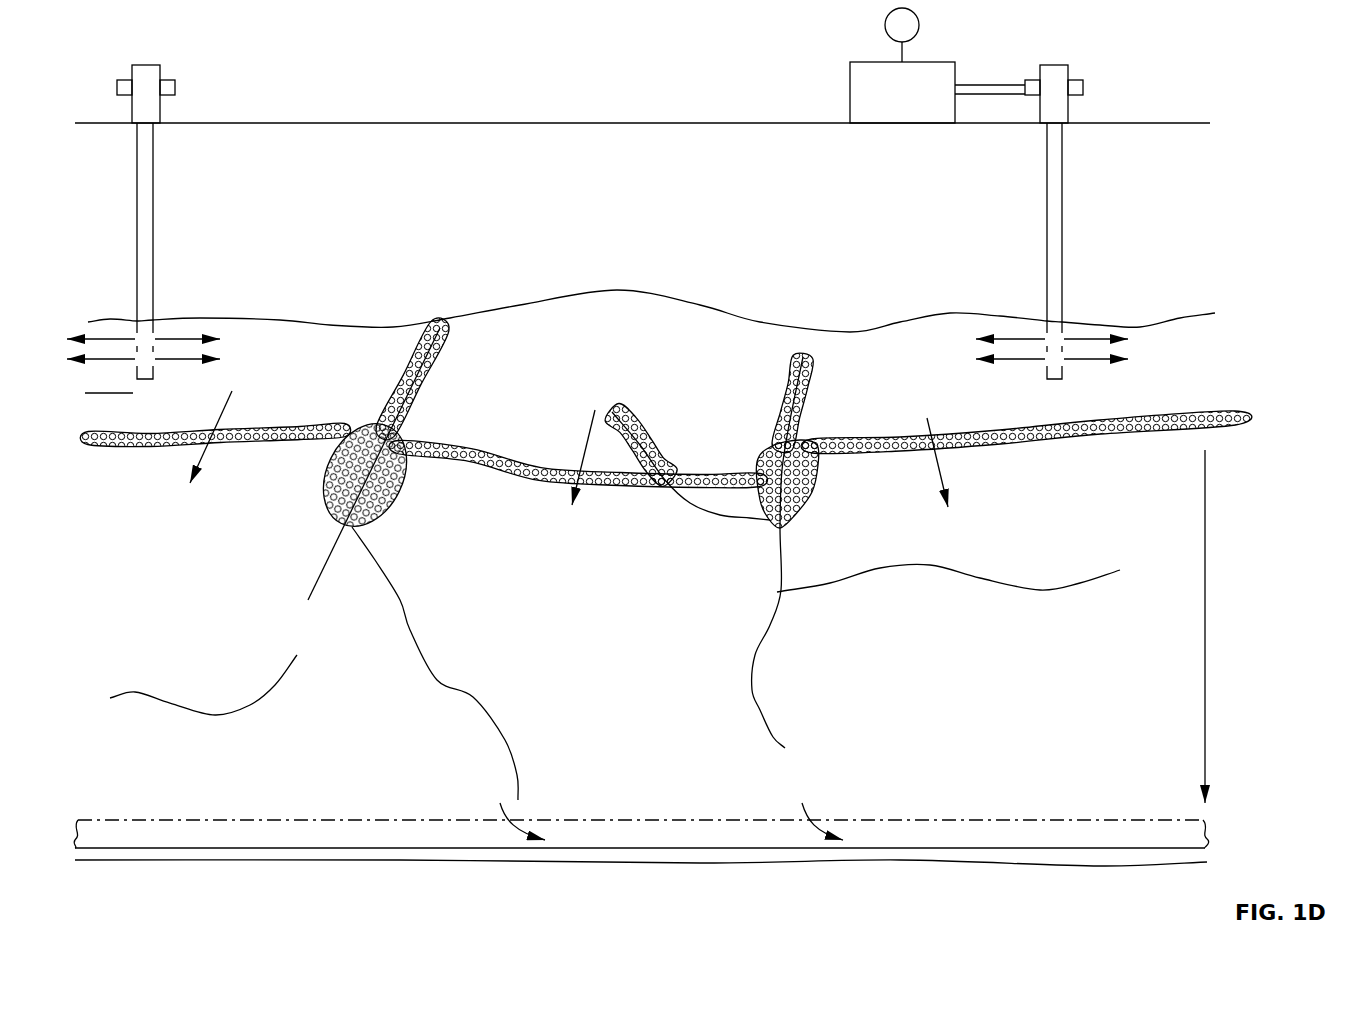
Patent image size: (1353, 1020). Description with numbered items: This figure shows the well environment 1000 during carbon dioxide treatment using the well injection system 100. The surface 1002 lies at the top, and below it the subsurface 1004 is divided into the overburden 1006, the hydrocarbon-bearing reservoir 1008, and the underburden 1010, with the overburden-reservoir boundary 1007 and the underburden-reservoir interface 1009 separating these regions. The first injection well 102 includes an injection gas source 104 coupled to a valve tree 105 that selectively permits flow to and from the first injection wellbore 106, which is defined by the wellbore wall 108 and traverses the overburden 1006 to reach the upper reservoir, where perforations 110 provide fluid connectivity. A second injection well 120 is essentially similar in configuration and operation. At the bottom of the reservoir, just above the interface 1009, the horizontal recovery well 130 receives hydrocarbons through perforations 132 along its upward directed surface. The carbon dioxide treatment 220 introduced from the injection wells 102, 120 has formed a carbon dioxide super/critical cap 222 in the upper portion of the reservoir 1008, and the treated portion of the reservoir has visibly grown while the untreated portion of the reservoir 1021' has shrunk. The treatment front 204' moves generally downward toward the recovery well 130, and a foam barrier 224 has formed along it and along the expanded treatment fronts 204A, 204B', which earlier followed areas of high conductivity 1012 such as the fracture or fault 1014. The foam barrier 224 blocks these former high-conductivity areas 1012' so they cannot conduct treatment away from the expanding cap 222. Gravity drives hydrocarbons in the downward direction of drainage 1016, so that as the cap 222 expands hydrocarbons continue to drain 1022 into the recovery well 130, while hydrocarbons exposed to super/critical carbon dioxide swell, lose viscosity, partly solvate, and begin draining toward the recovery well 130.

The well injection system 100 is at (673, 104).
The well environment 1000 is at (683, 63).
The first injection well 102 is at (1053, 65).
The injection gas source 104 is at (850, 92).
The valve tree 105 is at (1100, 108).
The first injection wellbore 106 is at (1037, 300).
The wellbore wall 108 is at (1046, 184).
The perforations 110 is at (1047, 403).
The second injection well 120 is at (162, 113).
The recovery well 130 is at (388, 838).
The perforations 132 is at (1025, 820).
The surface 1002 is at (455, 86).
The subsurface 1004 is at (732, 182).
The overburden 1006 is at (419, 183).
The overburden-reservoir boundary 1007 is at (847, 322).
The reservoir 1008 is at (1099, 674).
The underburden-reservoir interface 1009 is at (735, 860).
The underburden 1010 is at (394, 902).
The areas of high conductivity 1012 is at (615, 598).
The blocked areas of high conductivity 1012' is at (632, 532).
The fracture or fault 1014 is at (305, 596).
The downward direction of hydrocarbon drainage 1016 is at (1205, 535).
The untreated portion of the reservoir 1021' is at (641, 673).
The drainage 1022 is at (716, 802).
The treatment front 204' is at (666, 462).
The expanded treatment front 204A is at (327, 465).
The expanded treatment front 204B' is at (837, 440).
The carbon dioxide treatment 220 is at (183, 350).
The carbon dioxide super/critical cap 222 is at (647, 363).
The foam barrier 224 is at (470, 455).